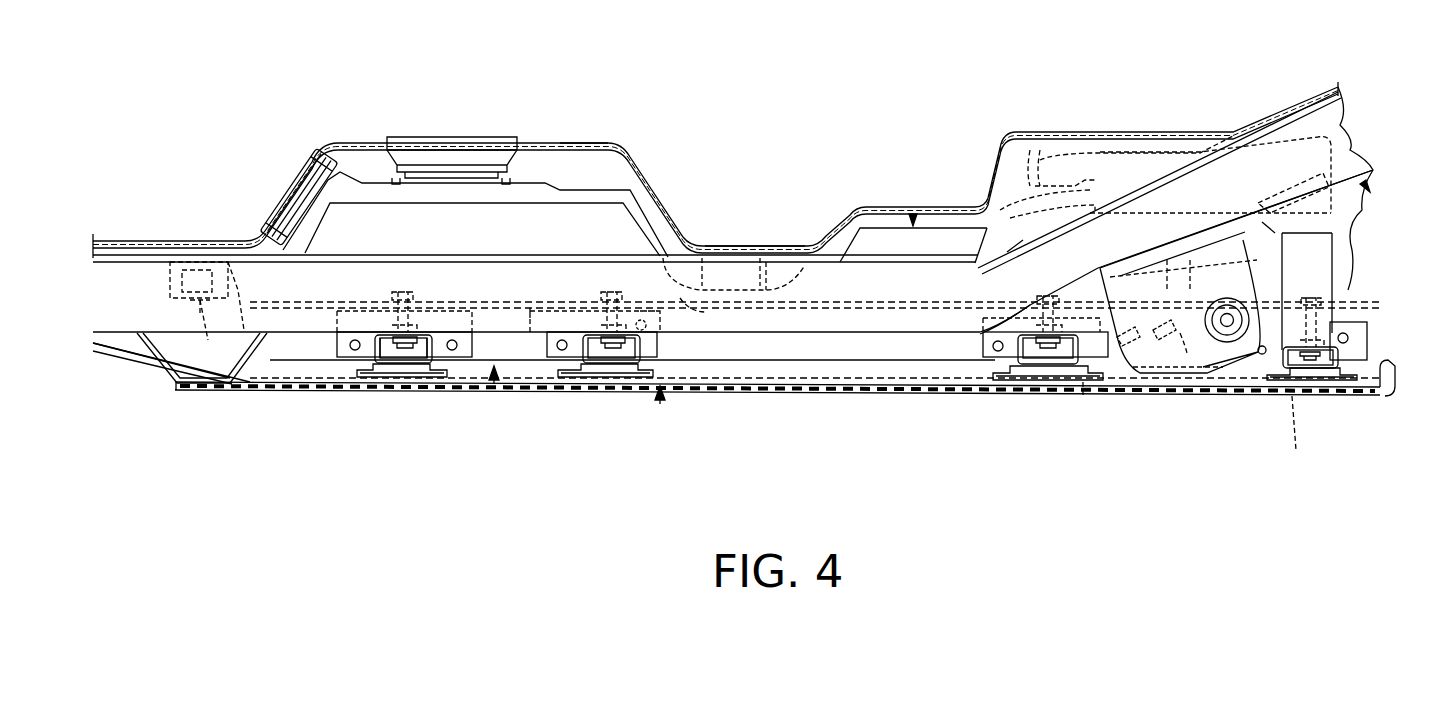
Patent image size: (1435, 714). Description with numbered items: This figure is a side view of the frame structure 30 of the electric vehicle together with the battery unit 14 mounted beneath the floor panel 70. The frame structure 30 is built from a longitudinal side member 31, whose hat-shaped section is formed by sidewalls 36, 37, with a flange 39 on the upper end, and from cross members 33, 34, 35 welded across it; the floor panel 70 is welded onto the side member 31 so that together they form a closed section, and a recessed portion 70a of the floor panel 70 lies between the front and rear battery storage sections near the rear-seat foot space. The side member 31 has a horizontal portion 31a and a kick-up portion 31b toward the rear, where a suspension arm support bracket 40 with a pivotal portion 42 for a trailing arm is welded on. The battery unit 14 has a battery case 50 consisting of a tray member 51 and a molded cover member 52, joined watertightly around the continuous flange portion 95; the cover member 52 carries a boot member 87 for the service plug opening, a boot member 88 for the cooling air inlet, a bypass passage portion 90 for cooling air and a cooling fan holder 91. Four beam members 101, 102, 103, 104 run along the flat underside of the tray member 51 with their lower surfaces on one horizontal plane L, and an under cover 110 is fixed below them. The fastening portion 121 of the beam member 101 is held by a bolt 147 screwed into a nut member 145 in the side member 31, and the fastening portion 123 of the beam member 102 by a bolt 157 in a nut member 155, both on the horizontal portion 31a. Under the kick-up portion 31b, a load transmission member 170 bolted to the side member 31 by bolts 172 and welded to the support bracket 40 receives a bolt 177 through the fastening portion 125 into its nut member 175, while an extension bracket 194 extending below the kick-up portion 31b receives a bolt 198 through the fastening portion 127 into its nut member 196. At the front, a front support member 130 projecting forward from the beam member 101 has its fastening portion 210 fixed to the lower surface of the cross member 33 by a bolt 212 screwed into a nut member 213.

The battery unit 14 is at (494, 384).
The frame structure 30 is at (1362, 186).
The side member 31 is at (898, 397).
The horizontal portion 31a is at (722, 395).
The kick-up portion 31b is at (1165, 180).
The cross member 33 is at (250, 340).
The cross member 34 is at (762, 300).
The cross member 35 is at (1027, 132).
The sidewall 36 is at (907, 283).
The sidewall 37 is at (930, 334).
The flange 39 is at (852, 260).
The suspension arm support bracket 40 is at (1160, 385).
The pivotal portion 42 is at (1227, 342).
The battery case 50 is at (913, 220).
The tray member 51 is at (855, 362).
The cover member 52 is at (630, 232).
The floor panel 70 is at (650, 165).
The recessed portion 70a is at (775, 245).
The boot member 87 is at (520, 160).
The boot member 88 is at (318, 168).
The bypass passage portion 90 is at (608, 190).
The cooling fan holder 91 is at (1200, 150).
The flange portion 95 is at (820, 300).
The beam member 101 is at (360, 378).
The beam member 102 is at (565, 378).
The beam member 103 is at (1003, 382).
The beam member 104 is at (1275, 383).
The under cover 110 is at (660, 404).
The fastening portion 121 is at (420, 333).
The fastening portion 123 is at (605, 322).
The fastening portion 125 is at (1035, 330).
The fastening portion 127 is at (1325, 335).
The front support member 130 is at (170, 372).
The nut member 145 is at (395, 322).
The bolt 147 is at (406, 348).
The nut member 155 is at (680, 305).
The bolt 157 is at (612, 348).
The load transmission member 170 is at (1105, 335).
The bolt 172 is at (1122, 395).
The nut member 175 is at (1084, 397).
The bolt 177 is at (1050, 352).
The extension bracket 194 is at (1310, 270).
The nut member 196 is at (1296, 452).
The bolt 198 is at (1318, 371).
The fastening portion 210 is at (184, 262).
The bolt 212 is at (206, 340).
The nut member 213 is at (229, 262).
The plane L is at (824, 380).